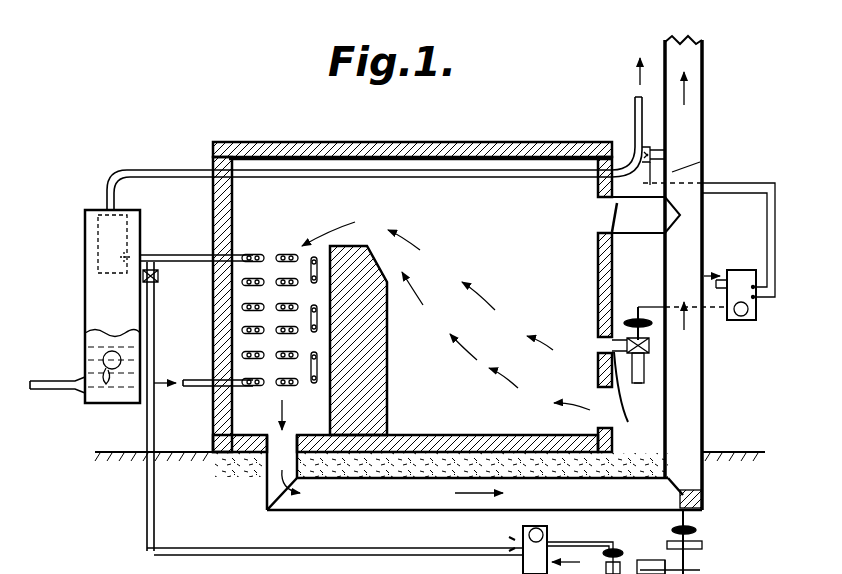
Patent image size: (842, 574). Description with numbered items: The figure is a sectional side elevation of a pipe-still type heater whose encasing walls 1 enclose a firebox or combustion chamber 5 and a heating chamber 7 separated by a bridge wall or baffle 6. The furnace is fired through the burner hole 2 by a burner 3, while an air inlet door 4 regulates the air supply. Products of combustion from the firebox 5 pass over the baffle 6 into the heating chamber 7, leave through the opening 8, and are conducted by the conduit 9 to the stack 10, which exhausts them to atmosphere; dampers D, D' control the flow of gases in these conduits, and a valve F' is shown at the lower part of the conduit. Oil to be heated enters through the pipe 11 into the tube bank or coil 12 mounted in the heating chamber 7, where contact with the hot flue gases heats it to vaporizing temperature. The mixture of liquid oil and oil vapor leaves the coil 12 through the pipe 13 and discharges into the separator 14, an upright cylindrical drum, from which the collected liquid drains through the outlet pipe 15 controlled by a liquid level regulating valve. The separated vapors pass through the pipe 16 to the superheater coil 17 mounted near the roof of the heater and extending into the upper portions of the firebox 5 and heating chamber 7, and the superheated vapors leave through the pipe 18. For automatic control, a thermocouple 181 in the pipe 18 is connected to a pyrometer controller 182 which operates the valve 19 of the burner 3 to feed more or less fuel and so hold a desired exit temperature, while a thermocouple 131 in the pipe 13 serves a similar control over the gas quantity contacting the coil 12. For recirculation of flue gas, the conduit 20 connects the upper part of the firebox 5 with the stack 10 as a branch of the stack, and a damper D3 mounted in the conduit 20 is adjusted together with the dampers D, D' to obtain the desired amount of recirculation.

The encasing walls 1 is at (412, 133).
The burner hole 2 is at (612, 346).
The burner 3 is at (672, 317).
The air inlet door 4 is at (628, 424).
The firebox 5 is at (446, 316).
The bridge wall 6 is at (387, 372).
The heating chamber 7 is at (213, 220).
The opening 8 is at (282, 440).
The conduit 9 is at (605, 497).
The stack 10 is at (688, 385).
The pipe 11 is at (195, 388).
The coil 12 is at (213, 342).
The pipe 13 is at (195, 262).
The separator 14 is at (90, 303).
The outlet pipe 15 is at (68, 390).
The pipe 16 is at (160, 172).
The superheater coil 17 is at (452, 172).
The pipe 18 is at (635, 113).
The valve 19 is at (645, 383).
The conduit 20 is at (634, 226).
The thermocouple 131 is at (155, 270).
The thermocouple 181 is at (670, 148).
The pyrometer controller 182 is at (740, 270).
The damper D is at (484, 507).
The damper D' is at (709, 223).
The damper D3 is at (597, 213).
The valve F' is at (698, 530).